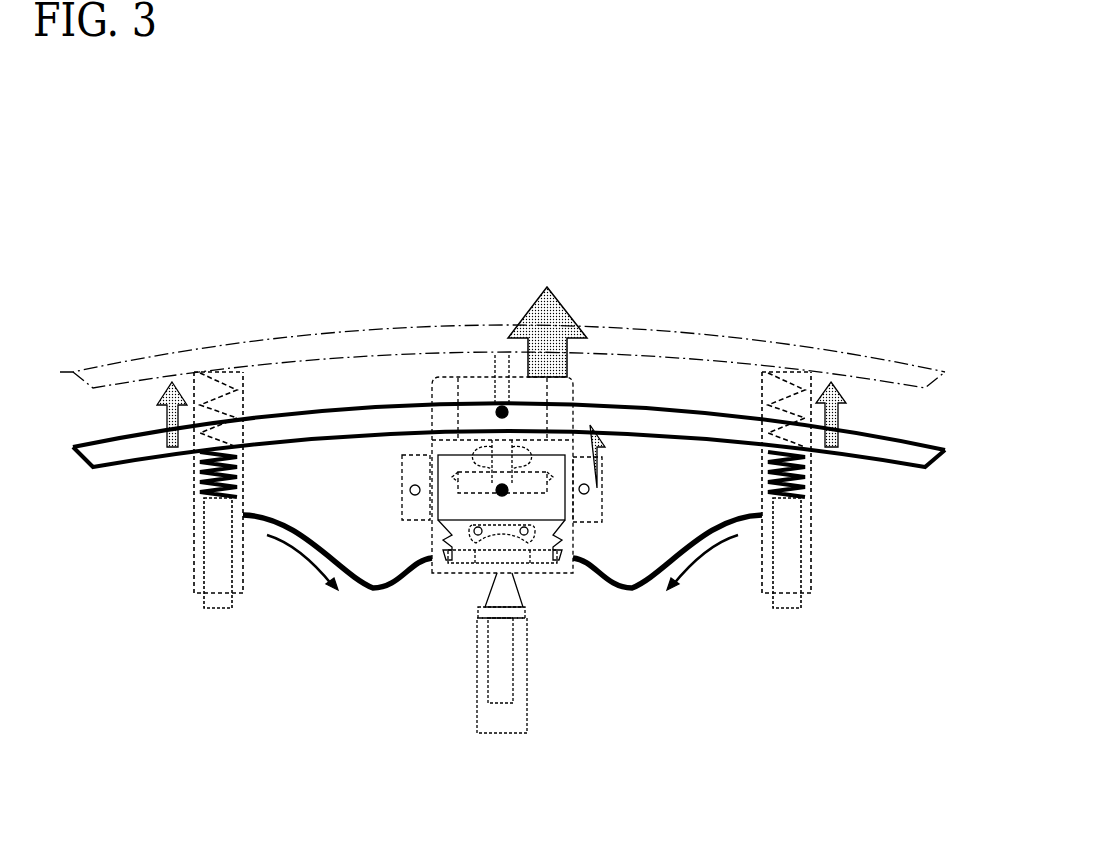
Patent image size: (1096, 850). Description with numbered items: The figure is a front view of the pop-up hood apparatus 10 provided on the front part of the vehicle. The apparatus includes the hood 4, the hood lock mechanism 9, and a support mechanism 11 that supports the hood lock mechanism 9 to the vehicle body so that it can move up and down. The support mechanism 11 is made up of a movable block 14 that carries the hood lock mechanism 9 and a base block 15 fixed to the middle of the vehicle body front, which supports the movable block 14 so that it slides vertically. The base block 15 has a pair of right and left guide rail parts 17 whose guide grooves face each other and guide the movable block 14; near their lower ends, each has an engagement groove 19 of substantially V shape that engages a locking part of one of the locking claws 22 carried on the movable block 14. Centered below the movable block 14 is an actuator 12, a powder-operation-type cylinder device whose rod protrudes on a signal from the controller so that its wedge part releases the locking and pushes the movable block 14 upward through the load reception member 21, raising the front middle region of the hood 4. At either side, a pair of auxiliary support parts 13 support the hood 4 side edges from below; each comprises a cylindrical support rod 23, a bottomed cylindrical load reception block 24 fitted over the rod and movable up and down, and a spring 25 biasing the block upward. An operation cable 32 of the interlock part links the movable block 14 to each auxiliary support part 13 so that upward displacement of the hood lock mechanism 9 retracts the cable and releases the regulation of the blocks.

The pop-up hood apparatus 10 is at (732, 190).
The hood 4 is at (300, 407).
The load reception member 21 is at (498, 522).
The spring 25 is at (197, 462).
The auxiliary support part 13 is at (185, 483).
The load reception block 24 is at (192, 535).
The support rod 23 is at (218, 608).
The operation cable 32 is at (257, 522).
The guide rail part 17 is at (433, 512).
The base block 15 is at (602, 479).
The movable block 14 is at (452, 528).
The engagement groove 19 is at (440, 545).
The support mechanism 11 is at (442, 560).
The locking claw 22 is at (467, 556).
The actuator 12 is at (477, 700).
The hood lock mechanism 9 is at (548, 412).